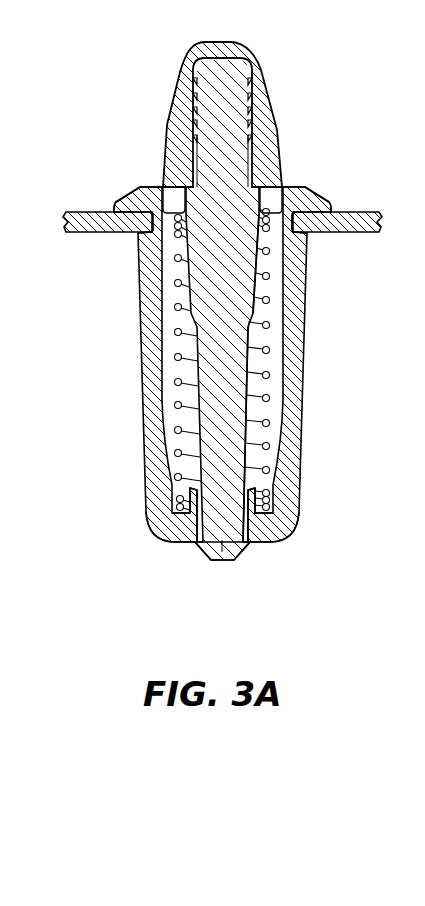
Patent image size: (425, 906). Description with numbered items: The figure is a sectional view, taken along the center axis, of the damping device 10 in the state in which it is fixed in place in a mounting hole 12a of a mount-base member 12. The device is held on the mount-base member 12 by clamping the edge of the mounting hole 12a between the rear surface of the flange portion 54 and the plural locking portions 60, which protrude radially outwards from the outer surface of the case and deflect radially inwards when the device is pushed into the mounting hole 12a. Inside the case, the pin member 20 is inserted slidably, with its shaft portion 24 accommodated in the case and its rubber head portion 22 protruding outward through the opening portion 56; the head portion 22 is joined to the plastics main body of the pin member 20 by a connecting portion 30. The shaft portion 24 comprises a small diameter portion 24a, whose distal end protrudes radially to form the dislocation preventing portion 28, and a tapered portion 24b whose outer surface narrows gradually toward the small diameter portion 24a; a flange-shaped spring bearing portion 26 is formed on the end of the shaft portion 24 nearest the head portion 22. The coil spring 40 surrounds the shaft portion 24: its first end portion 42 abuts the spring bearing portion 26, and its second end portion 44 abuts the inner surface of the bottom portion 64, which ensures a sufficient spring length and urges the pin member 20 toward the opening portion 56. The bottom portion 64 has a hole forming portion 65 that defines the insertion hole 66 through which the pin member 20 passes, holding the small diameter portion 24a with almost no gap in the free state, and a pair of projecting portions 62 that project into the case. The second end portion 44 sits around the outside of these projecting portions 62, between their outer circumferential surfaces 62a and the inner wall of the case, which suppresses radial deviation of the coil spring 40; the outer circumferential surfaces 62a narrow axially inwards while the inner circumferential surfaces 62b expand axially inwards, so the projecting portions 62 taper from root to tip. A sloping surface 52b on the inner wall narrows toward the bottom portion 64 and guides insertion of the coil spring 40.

The damping device 10 is at (226, 599).
The mount-base member 12 is at (357, 211).
The mounting hole 12a is at (98, 212).
The pin member 20 is at (179, 71).
The head portion 22 is at (225, 42).
The shaft portion 24 is at (217, 366).
The small diameter portion 24a is at (230, 458).
The tapered portion 24b is at (258, 366).
The spring bearing portion 26 is at (303, 230).
The dislocation preventing portion 28 is at (248, 548).
The connecting portion 30 is at (256, 80).
The coil spring 40 is at (175, 308).
The first end portion 42 is at (178, 212).
The second end portion 44 is at (272, 508).
The sloping surface 52b is at (158, 430).
The flange portion 54 is at (321, 190).
The opening portion 56 is at (288, 188).
The locking portions 60 is at (135, 234).
The projecting portions 62 is at (252, 524).
The outer circumferential surfaces 62a is at (261, 492).
The inner circumferential surfaces 62b is at (240, 503).
The bottom portion 64 is at (180, 541).
The hole forming portion 65 is at (200, 523).
The insertion hole 66 is at (222, 525).